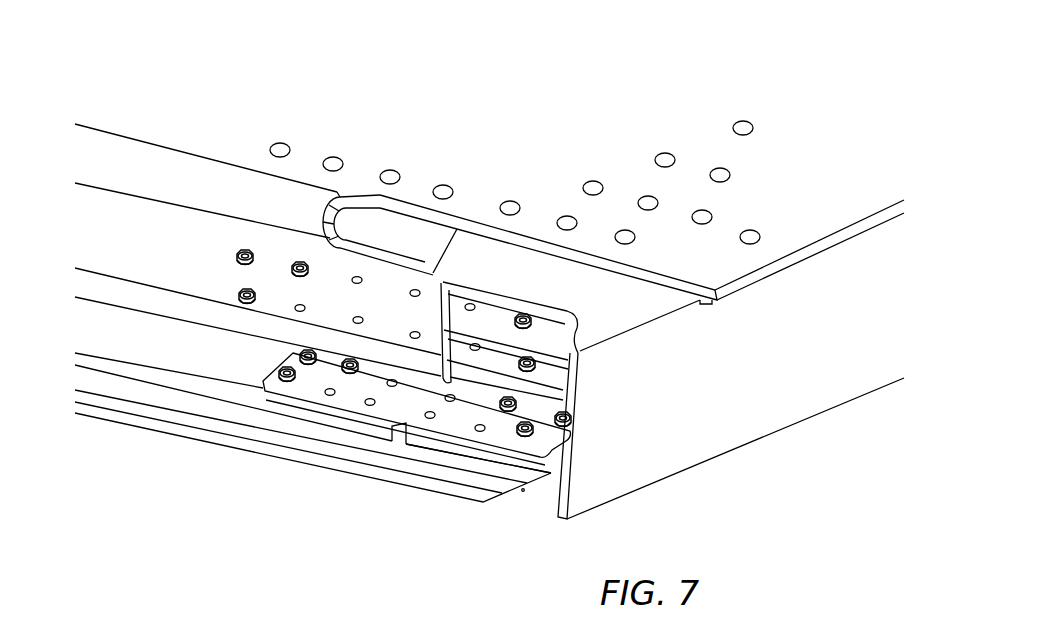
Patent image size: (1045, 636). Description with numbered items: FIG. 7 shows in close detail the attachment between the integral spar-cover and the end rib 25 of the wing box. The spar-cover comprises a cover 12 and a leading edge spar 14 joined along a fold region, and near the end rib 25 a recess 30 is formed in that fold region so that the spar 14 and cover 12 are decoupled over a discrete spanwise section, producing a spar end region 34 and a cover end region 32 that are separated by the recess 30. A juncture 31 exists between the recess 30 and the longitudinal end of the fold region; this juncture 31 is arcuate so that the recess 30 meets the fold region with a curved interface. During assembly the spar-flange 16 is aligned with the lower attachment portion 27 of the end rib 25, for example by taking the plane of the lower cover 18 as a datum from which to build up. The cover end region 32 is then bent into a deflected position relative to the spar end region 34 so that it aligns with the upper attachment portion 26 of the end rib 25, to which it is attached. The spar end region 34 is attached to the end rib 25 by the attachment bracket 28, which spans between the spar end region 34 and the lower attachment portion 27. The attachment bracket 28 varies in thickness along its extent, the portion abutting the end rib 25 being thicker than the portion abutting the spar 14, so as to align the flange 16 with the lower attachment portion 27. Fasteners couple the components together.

The cover 12 is at (227, 125).
The spar 14 is at (153, 265).
The spar-flange 16 is at (157, 348).
The lower cover 18 is at (213, 410).
The end rib 25 is at (742, 417).
The upper attachment portion 26 is at (560, 285).
The lower attachment portion 27 is at (492, 455).
The attachment bracket 28 is at (418, 420).
The recess 30 is at (393, 242).
The juncture 31 is at (347, 207).
The cover end region 32 is at (750, 198).
The spar end region 34 is at (357, 427).